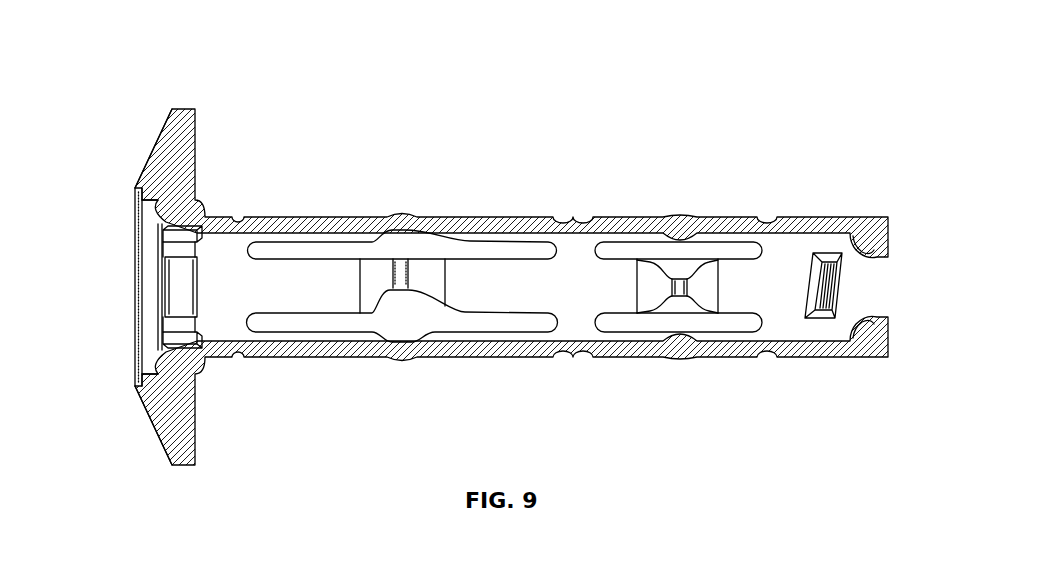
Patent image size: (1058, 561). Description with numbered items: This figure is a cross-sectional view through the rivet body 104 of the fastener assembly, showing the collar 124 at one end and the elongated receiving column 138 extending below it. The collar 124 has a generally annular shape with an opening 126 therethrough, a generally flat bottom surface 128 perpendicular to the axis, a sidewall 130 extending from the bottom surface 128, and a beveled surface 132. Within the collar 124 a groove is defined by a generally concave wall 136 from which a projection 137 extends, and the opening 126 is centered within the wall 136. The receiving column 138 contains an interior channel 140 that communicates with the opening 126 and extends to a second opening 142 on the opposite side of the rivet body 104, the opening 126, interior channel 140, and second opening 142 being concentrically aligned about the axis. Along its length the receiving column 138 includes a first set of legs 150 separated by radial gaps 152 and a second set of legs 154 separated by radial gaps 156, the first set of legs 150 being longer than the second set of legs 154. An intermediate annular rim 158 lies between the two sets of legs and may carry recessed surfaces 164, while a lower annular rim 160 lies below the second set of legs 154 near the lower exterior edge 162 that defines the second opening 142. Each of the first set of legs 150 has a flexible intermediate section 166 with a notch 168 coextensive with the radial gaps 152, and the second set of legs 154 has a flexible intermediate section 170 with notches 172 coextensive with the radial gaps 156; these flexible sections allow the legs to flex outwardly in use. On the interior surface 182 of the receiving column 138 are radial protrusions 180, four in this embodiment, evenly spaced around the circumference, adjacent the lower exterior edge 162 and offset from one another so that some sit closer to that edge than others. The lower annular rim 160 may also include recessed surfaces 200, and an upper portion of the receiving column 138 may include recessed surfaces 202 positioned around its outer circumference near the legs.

The rivet body 104 is at (142, 48).
The collar 124 is at (195, 462).
The opening 126 is at (120, 270).
The bottom surface 128 is at (197, 155).
The sidewall 130 is at (185, 108).
The beveled surface 132 is at (153, 433).
The wall 136 is at (203, 236).
The projection 137 is at (148, 220).
The receiving column 138 is at (748, 360).
The interior channel 140 is at (866, 287).
The second opening 142 is at (907, 327).
The first set of legs 150 is at (440, 218).
The radial gaps 152 is at (306, 324).
The second set of legs 154 is at (633, 230).
The radial gaps 156 is at (746, 236).
The intermediate annular rim 158 is at (570, 218).
The lower annular rim 160 is at (852, 218).
The lower exterior edge 162 is at (887, 360).
The recessed surfaces 164 is at (590, 355).
The flexible intermediate section 166 is at (390, 218).
The notch 168 is at (398, 306).
The flexible intermediate section 170 is at (678, 360).
The notches 172 is at (679, 226).
The radial protrusions 180 is at (832, 250).
The interior surface 182 is at (807, 358).
The recessed surfaces 200 is at (766, 334).
The recessed surfaces 202 is at (240, 360).